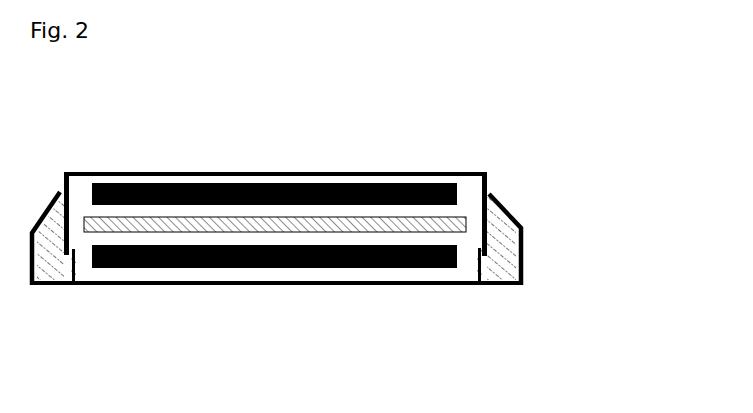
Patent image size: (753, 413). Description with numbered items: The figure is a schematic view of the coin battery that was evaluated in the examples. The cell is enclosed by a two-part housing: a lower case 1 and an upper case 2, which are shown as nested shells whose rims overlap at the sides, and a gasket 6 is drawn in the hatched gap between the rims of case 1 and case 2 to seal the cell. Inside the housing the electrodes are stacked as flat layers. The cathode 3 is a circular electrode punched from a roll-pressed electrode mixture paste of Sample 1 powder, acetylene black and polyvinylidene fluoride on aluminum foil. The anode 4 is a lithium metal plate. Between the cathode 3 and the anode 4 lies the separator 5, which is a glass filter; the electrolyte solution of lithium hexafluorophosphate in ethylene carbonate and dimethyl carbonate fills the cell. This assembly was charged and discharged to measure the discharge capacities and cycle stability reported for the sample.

The Case (bottom) 1 is at (85, 285).
The Case (top) 2 is at (139, 169).
The cathode 3 is at (208, 261).
The anode 4 is at (293, 183).
The separator 5 is at (271, 227).
The Gasket 6 is at (497, 222).